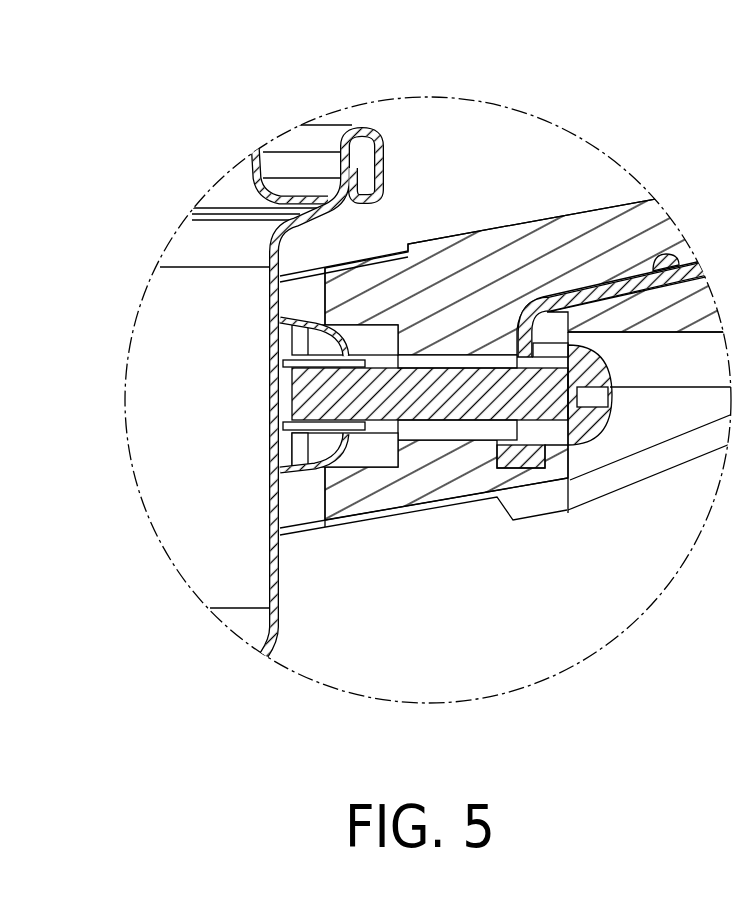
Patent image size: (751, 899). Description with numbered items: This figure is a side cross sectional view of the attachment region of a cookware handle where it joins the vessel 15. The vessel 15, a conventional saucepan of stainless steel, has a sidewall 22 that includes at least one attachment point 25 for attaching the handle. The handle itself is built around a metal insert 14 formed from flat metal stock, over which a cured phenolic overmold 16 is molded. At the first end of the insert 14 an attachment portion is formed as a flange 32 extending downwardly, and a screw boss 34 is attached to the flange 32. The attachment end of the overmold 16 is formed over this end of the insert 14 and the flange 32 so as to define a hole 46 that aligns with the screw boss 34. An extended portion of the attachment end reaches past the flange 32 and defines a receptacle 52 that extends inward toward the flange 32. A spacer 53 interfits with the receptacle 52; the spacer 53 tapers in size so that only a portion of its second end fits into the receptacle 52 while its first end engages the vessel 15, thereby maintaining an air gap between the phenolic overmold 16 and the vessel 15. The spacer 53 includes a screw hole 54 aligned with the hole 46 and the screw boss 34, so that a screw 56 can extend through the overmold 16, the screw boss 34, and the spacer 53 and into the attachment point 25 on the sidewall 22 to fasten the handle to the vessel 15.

The metal insert 14 is at (603, 283).
The vessel 15 is at (270, 313).
The overmold 16 is at (509, 256).
The sidewall 22 is at (265, 518).
The attachment point 25 is at (270, 453).
The flange 32 is at (517, 330).
The screw boss 34 is at (548, 447).
The hole 46 is at (467, 428).
The receptacle 52 is at (352, 457).
The spacer 53 is at (312, 435).
The screw hole 54 is at (400, 432).
The screw 56 is at (610, 407).